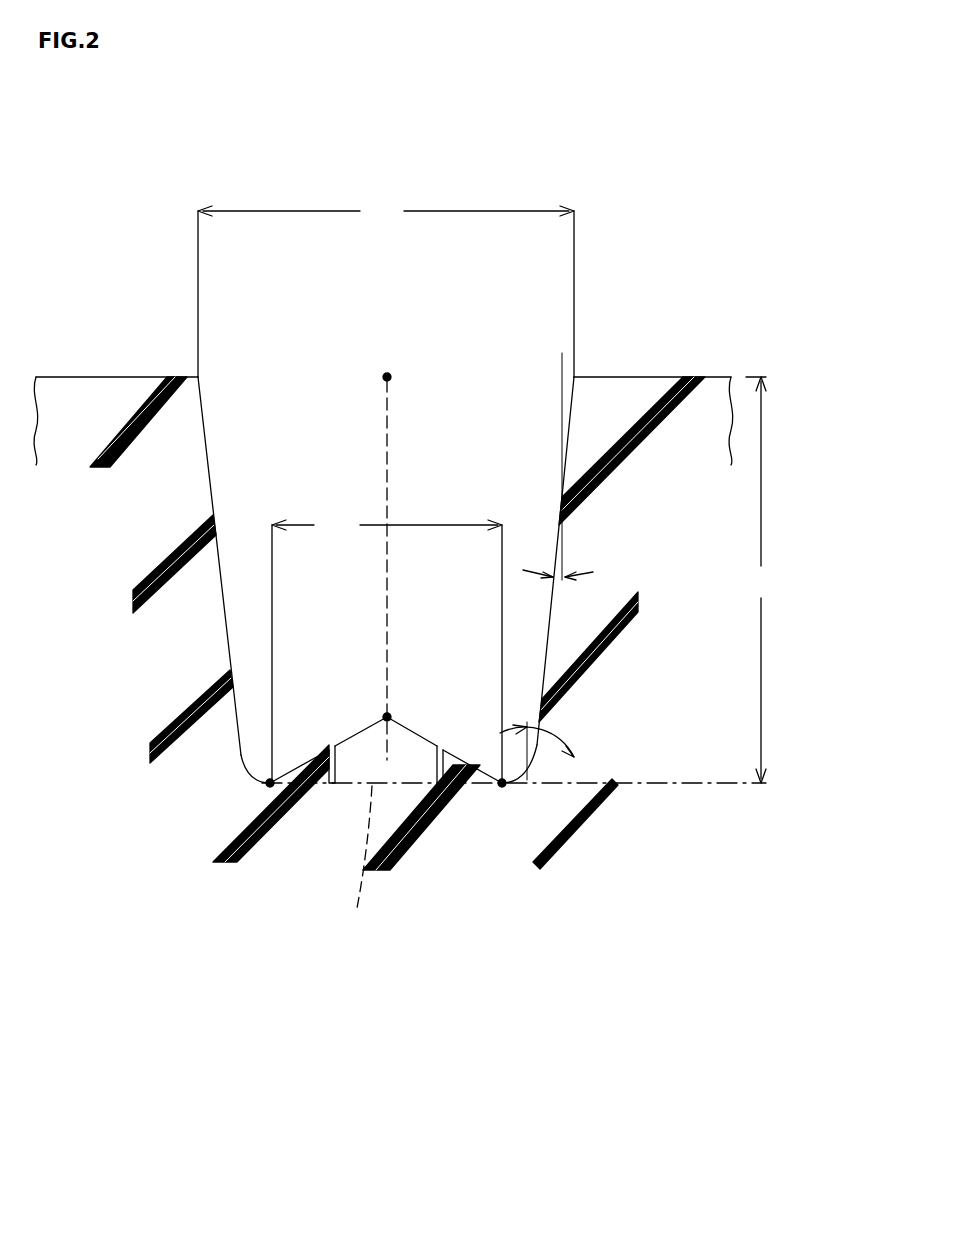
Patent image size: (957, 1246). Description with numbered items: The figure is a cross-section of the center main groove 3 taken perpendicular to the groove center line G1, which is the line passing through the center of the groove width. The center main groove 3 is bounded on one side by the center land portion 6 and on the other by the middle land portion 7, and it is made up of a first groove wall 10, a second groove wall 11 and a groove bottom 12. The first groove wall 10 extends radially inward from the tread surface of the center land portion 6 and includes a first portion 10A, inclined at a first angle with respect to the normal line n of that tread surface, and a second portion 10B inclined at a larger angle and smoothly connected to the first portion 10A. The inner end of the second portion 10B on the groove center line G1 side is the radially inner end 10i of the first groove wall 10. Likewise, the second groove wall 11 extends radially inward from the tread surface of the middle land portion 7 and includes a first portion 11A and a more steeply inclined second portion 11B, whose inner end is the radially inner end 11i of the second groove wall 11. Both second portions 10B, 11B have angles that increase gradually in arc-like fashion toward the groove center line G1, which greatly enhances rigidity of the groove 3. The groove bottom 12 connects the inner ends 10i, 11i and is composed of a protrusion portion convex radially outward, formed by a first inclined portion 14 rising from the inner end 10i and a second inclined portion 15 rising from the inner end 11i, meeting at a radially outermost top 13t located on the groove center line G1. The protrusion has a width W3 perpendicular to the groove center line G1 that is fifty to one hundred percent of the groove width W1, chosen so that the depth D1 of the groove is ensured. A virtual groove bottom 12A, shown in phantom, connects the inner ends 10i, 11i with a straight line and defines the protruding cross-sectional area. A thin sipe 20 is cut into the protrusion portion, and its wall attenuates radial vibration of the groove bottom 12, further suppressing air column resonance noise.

The middle land portion 7 is at (116, 376).
The center land portion 6 is at (654, 376).
The main groove (4) 3 is at (316, 446).
The groove center line G1 is at (387, 373).
The normal line n is at (561, 402).
The groove width W1 is at (386, 289).
The width of protrusion portion W3 is at (387, 649).
The depth of center main groove D1 is at (762, 580).
The second groove wall 11 is at (148, 617).
The first portion of second groove wall 11A is at (234, 615).
The second portion of second groove wall 11B is at (268, 784).
The radially inner end of second groove wall 11i is at (268, 785).
The first groove wall 10 is at (636, 637).
The first portion of first groove wall 10A is at (545, 640).
The second portion of first groove wall 10B is at (508, 787).
The radially inner end of first groove wall 10i is at (502, 786).
The groove bottom 12 is at (357, 844).
The virtual groove bottom 12A is at (360, 863).
The radially outermost top of protrusion portion 13t is at (386, 714).
The first inclined portion 14 is at (450, 765).
The second inclined portion 15 is at (322, 758).
The sipe 20 is at (441, 745).